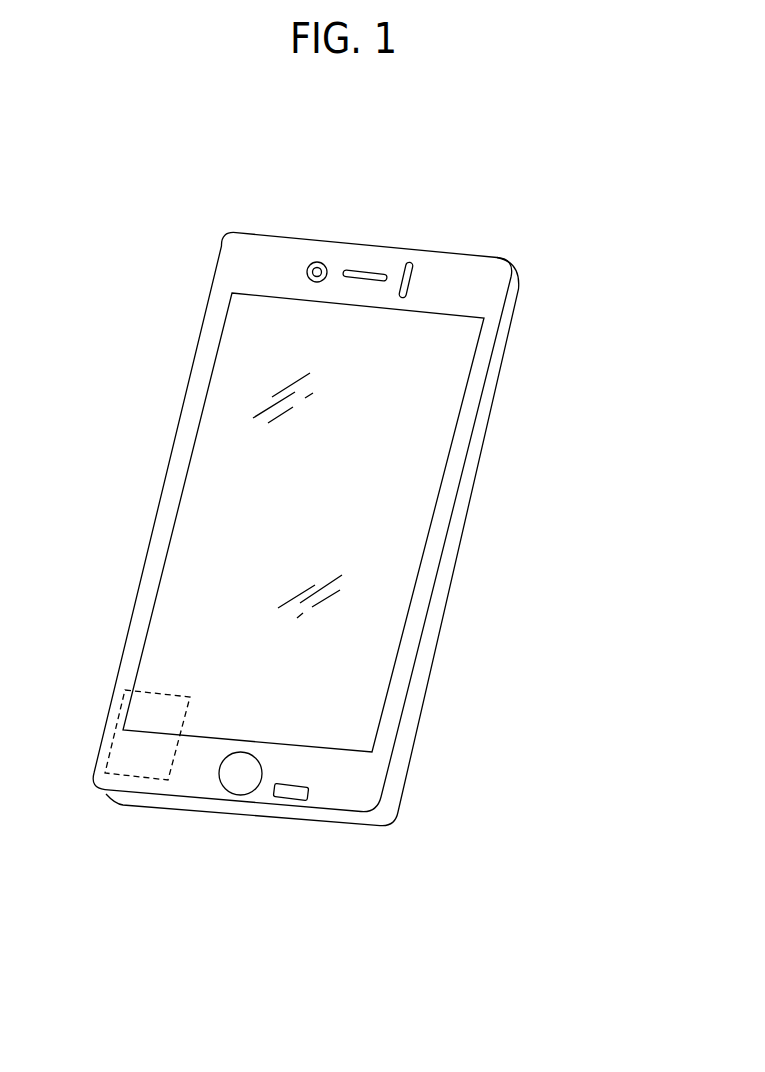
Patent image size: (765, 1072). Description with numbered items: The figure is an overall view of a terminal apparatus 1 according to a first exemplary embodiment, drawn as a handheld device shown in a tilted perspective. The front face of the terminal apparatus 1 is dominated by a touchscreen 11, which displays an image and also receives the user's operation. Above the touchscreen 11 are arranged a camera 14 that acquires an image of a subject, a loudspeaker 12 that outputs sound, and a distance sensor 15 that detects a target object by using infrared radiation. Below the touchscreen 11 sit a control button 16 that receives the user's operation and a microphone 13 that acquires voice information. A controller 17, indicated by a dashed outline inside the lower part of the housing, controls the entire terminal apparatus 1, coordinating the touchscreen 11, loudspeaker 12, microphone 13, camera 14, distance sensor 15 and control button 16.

The terminal apparatus 1 is at (531, 166).
The touchscreen 11 is at (222, 509).
The loudspeaker 12 is at (361, 268).
The microphone 13 is at (288, 802).
The camera 14 is at (317, 262).
The distance sensor 15 is at (410, 262).
The control button 16 is at (228, 797).
The controller 17 is at (113, 704).